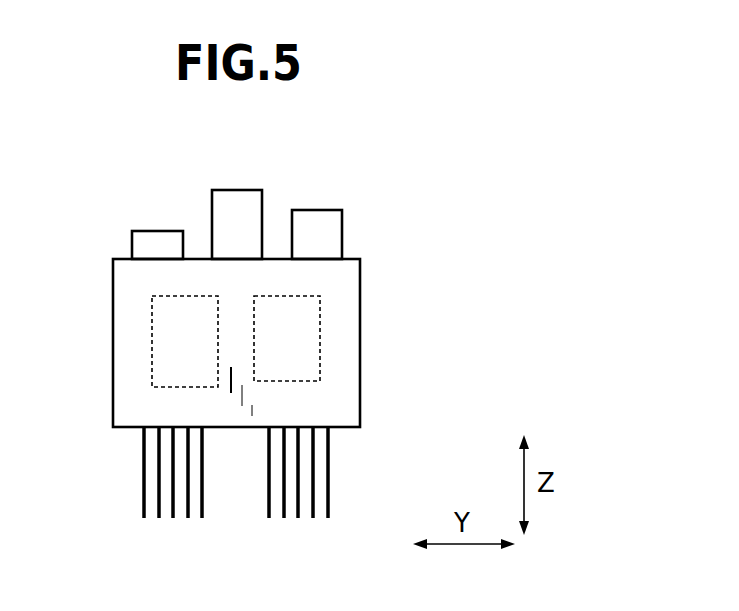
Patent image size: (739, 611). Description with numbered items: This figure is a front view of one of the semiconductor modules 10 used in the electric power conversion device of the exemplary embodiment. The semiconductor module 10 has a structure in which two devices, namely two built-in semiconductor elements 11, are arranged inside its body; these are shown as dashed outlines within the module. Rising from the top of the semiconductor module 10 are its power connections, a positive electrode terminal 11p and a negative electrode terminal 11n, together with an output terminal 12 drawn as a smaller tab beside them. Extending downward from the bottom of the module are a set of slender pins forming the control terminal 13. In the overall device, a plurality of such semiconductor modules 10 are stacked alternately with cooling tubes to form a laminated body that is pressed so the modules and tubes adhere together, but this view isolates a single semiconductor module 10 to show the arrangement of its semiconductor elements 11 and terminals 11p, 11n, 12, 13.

The semiconductor module 10 is at (382, 198).
The semiconductor element 11 is at (163, 333).
The negative electrode terminal 11n is at (243, 223).
The positive electrode terminal 11p is at (320, 223).
The output terminal 12 is at (157, 242).
The control terminal 13 is at (142, 485).